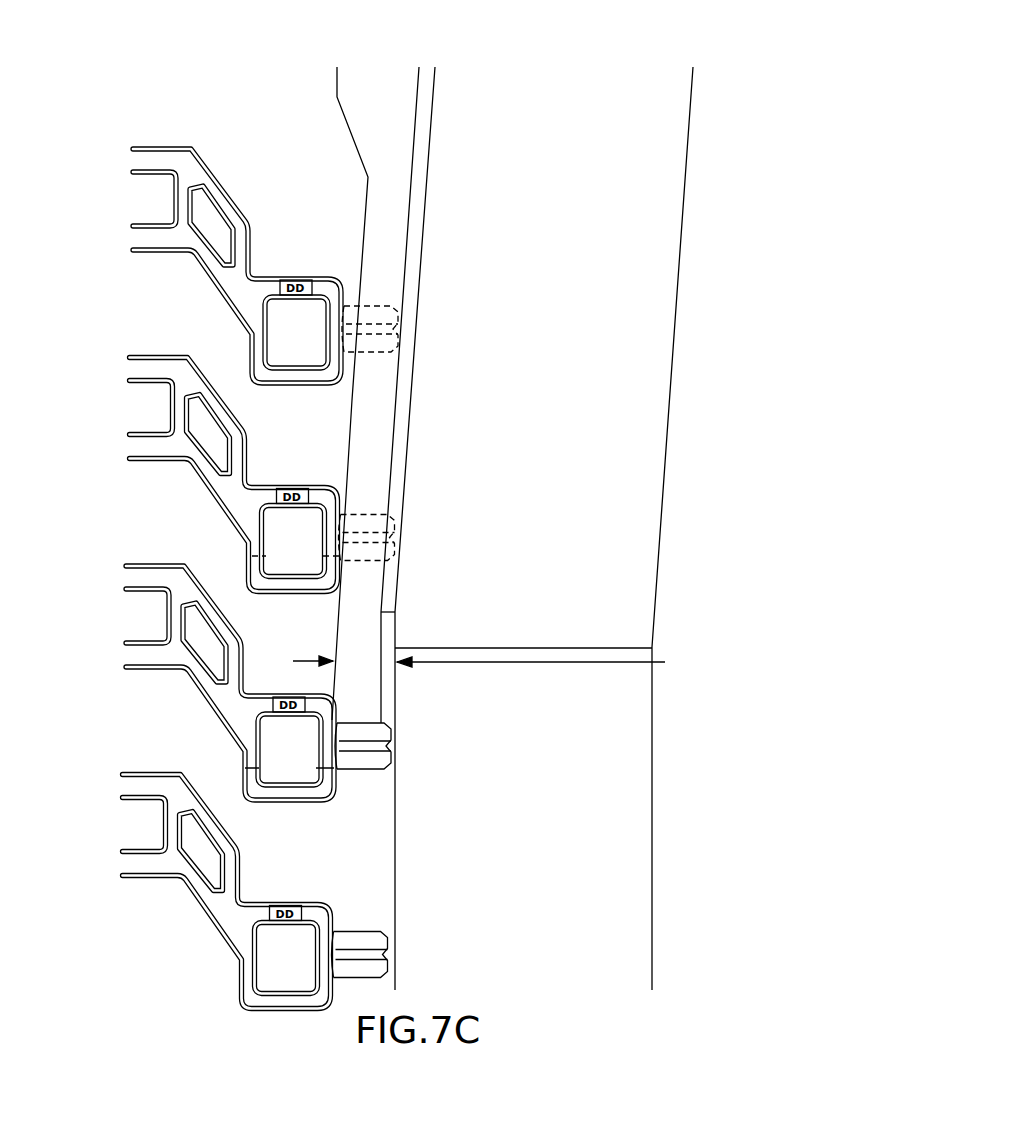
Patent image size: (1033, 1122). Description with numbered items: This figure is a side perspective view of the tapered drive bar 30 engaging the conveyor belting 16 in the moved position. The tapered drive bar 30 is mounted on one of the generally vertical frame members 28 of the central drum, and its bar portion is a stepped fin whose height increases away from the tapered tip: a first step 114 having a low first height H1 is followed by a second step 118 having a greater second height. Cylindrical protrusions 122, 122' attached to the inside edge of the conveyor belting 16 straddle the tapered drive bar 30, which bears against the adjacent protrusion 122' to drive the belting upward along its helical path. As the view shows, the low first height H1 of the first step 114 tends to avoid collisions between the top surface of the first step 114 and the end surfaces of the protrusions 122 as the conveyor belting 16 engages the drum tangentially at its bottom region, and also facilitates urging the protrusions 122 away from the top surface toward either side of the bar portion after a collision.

The conveyor belting 16 is at (147, 157).
The tapered drive bar 30 is at (372, 135).
The frame member 28 is at (538, 130).
The second step 118 is at (382, 142).
The first step 114 is at (375, 390).
The protrusion 122 is at (216, 493).
The adjacent protrusion 122' is at (213, 677).
The first height H1 is at (499, 663).